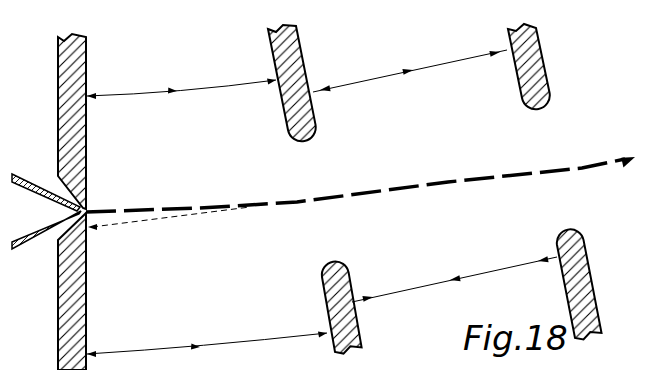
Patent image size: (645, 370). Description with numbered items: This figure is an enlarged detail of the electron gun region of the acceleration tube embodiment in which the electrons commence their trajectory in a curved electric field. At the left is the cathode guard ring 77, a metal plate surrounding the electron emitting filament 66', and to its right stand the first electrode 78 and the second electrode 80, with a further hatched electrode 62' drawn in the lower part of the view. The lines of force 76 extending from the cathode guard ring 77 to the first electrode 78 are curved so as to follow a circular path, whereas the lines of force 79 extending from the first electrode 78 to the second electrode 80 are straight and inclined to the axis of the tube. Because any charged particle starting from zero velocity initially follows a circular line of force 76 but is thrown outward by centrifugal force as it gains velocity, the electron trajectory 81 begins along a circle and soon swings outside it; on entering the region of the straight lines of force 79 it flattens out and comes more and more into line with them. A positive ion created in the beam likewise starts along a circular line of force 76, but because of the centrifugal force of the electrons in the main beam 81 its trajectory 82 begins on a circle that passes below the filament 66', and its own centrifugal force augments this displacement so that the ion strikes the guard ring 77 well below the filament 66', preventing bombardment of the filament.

The cathode guard ring 77 is at (86, 310).
The filament 66' is at (46, 228).
The electron trajectory 81 is at (158, 208).
The positive ion trajectory 82 is at (161, 222).
The first electrode 78 is at (289, 128).
The second electrode 80 is at (549, 88).
The deflection electrode 62' is at (362, 315).
The lines of force 76 is at (162, 93).
The lines of force 79 is at (360, 83).